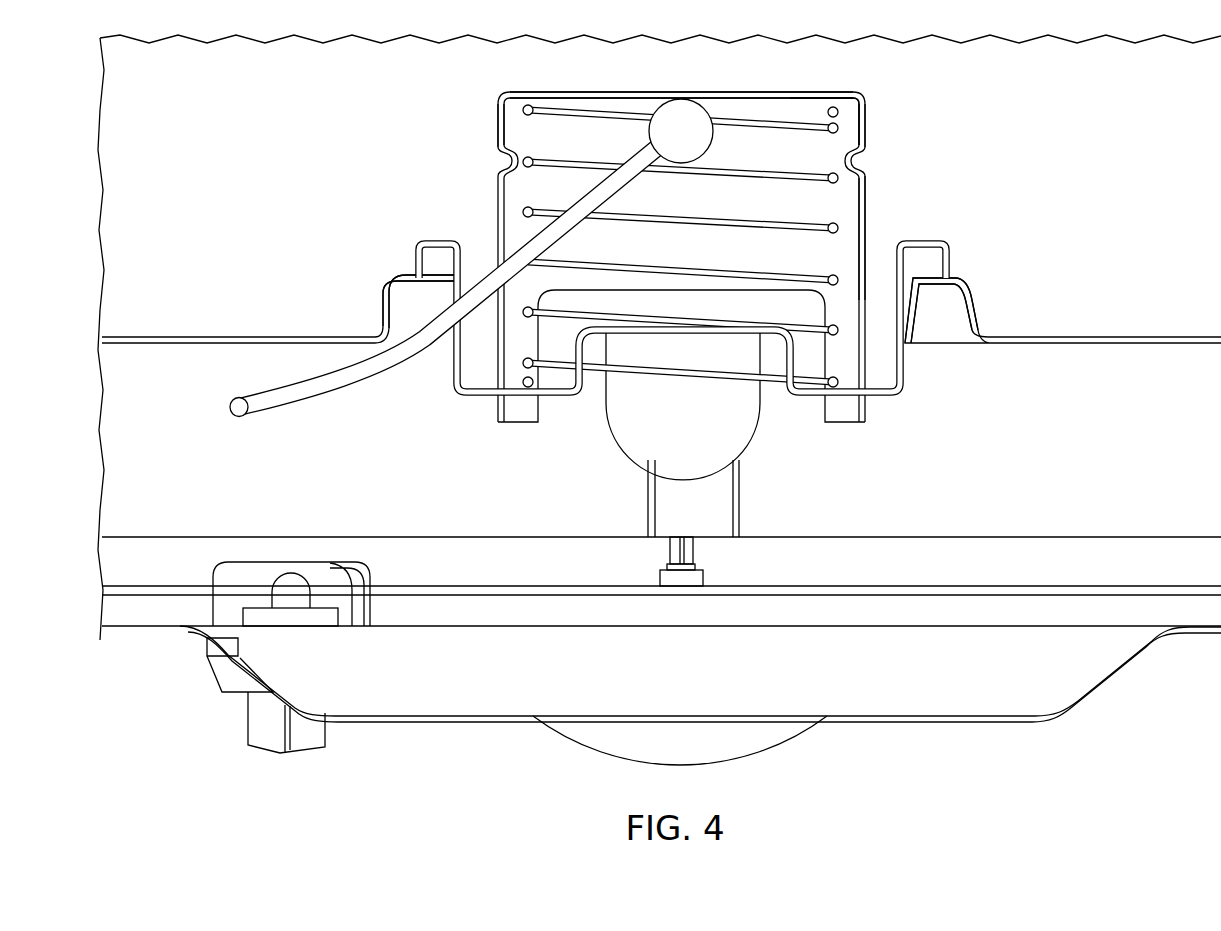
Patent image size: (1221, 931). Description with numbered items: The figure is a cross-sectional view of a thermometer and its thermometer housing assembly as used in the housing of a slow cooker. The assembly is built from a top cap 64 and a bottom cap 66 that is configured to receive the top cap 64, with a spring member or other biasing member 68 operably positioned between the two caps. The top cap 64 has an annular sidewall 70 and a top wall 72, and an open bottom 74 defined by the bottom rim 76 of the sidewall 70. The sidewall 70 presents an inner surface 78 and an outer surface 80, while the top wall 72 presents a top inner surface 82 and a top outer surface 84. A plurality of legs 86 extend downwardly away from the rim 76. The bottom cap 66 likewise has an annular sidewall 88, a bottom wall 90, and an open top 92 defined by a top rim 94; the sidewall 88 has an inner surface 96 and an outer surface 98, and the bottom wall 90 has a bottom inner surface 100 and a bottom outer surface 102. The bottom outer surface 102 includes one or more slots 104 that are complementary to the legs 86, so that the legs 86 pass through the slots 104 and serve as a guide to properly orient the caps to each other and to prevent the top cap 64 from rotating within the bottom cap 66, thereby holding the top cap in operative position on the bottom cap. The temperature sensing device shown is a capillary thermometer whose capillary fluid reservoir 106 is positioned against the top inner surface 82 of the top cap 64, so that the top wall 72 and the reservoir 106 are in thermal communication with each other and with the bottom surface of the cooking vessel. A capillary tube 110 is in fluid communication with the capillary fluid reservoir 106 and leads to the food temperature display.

The top cap 64 is at (681, 264).
The bottom cap 66 is at (910, 376).
The spring member 68 is at (670, 277).
The annular sidewall 70 is at (497, 128).
The top wall 72 is at (584, 92).
The open bottom 74 is at (776, 440).
The bottom rim 76 is at (742, 292).
The inner surface 78 is at (857, 243).
The outer surface 80 is at (868, 186).
The top inner surface 82 is at (800, 100).
The top outer surface 84 is at (697, 90).
The legs 86 is at (507, 426).
The annular sidewall 88 is at (455, 361).
The bottom wall 90 is at (560, 397).
The open top 92 is at (661, 269).
The top rim 94 is at (440, 237).
The inner surface 96 is at (683, 343).
The outer surface 98 is at (915, 316).
The bottom inner surface 100 is at (477, 390).
The bottom outer surface 102 is at (527, 397).
The slots 104 is at (887, 400).
The capillary fluid reservoir 106 is at (674, 112).
The capillary tube 110 is at (317, 370).